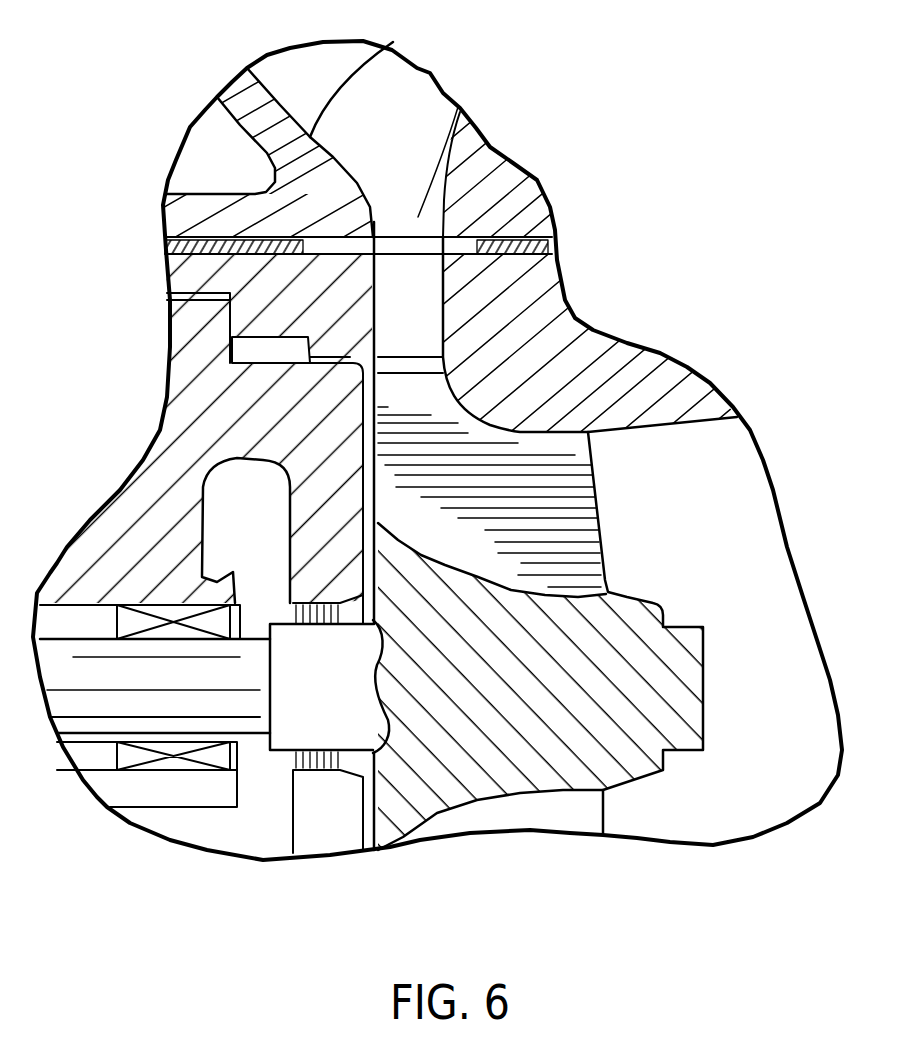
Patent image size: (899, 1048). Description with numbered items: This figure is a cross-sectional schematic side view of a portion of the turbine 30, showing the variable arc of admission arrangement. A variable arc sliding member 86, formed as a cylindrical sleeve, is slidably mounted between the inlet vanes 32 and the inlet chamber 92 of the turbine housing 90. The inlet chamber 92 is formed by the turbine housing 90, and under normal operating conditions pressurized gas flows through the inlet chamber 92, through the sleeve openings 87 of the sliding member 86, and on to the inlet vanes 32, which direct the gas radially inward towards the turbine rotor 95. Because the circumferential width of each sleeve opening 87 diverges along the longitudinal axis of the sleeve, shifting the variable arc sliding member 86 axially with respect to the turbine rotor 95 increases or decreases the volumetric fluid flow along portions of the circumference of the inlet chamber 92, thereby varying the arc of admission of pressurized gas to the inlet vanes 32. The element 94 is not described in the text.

The turbine 30 is at (118, 360).
The inlet vanes 32 is at (423, 319).
The variable arc sliding member 86 is at (537, 248).
The sleeve openings 87 is at (458, 107).
The turbine housing 90 is at (393, 44).
The inlet chamber 92 is at (387, 237).
The flange 94 is at (520, 268).
The turbine rotor 95 is at (587, 610).